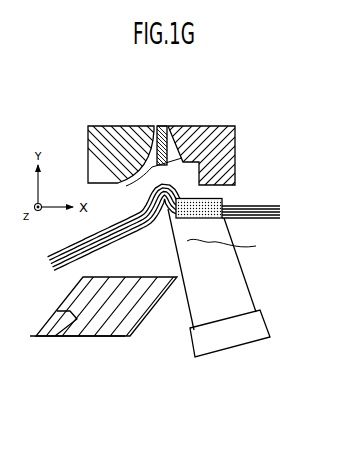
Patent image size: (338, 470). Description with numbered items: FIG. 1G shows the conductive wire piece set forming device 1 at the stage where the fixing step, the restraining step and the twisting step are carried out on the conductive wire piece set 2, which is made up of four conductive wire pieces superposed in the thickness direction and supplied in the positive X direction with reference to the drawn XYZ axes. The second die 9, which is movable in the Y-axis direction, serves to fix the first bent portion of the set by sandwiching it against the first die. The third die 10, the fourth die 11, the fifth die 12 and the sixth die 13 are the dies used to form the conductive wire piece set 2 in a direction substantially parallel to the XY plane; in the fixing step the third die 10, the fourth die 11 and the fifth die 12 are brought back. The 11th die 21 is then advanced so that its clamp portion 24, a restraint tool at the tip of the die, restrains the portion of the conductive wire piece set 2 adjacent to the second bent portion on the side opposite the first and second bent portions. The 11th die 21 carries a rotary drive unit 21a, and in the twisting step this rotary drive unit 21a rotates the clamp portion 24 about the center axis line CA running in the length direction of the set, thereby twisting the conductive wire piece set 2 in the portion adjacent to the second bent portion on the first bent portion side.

The conductive wire piece set forming device 1 is at (238, 91).
The conductive wire piece set 2 is at (77, 243).
The second die 9 is at (161, 125).
The third die 10 is at (119, 179).
The fourth die 11 is at (236, 137).
The fifth die 12 is at (145, 312).
The sixth die 13 is at (84, 299).
The 11th die 21 is at (250, 289).
The rotary drive unit 21a is at (256, 324).
The clamp portion 24 is at (166, 209).
The center axis line CA is at (233, 246).